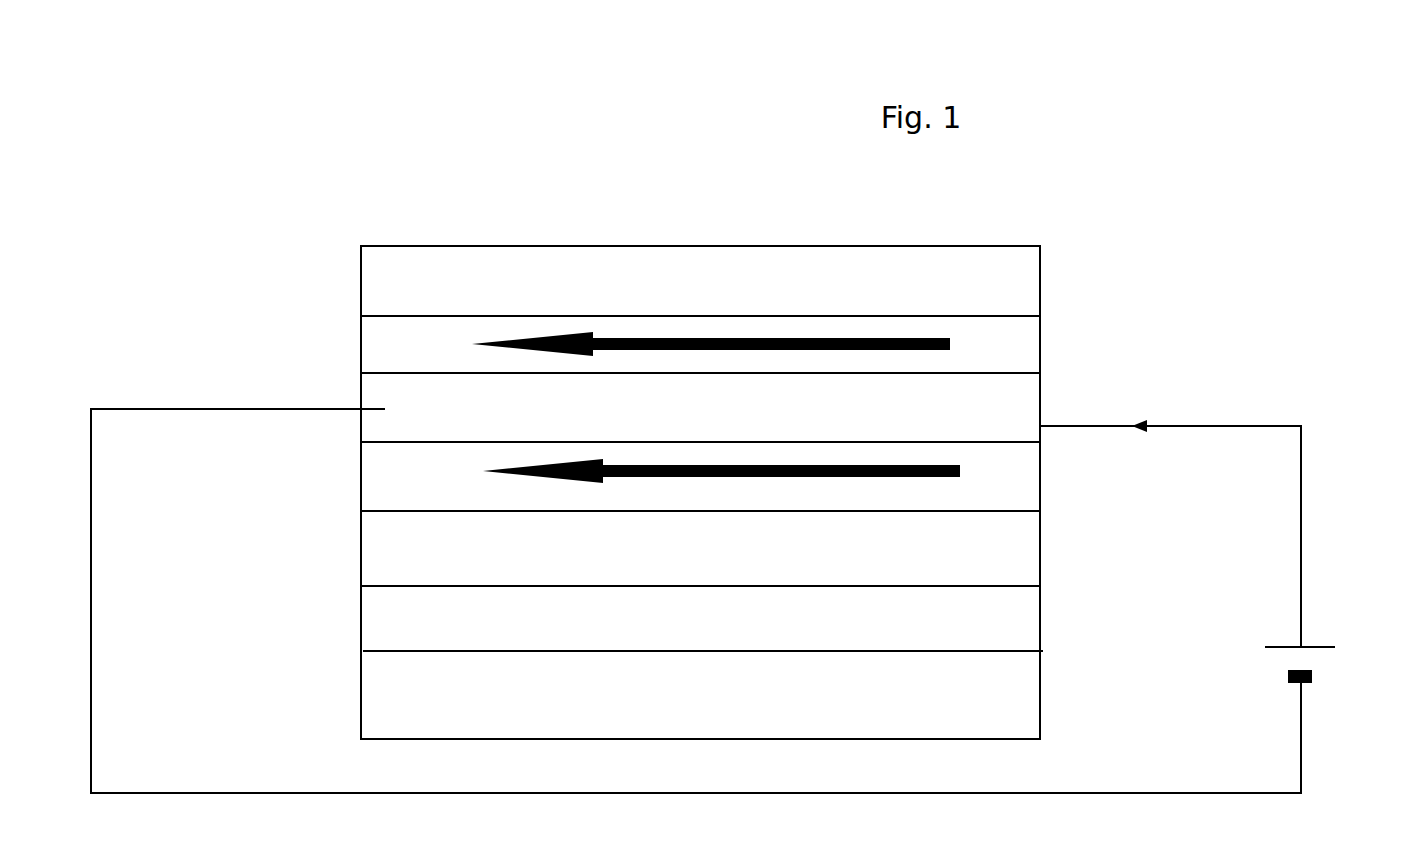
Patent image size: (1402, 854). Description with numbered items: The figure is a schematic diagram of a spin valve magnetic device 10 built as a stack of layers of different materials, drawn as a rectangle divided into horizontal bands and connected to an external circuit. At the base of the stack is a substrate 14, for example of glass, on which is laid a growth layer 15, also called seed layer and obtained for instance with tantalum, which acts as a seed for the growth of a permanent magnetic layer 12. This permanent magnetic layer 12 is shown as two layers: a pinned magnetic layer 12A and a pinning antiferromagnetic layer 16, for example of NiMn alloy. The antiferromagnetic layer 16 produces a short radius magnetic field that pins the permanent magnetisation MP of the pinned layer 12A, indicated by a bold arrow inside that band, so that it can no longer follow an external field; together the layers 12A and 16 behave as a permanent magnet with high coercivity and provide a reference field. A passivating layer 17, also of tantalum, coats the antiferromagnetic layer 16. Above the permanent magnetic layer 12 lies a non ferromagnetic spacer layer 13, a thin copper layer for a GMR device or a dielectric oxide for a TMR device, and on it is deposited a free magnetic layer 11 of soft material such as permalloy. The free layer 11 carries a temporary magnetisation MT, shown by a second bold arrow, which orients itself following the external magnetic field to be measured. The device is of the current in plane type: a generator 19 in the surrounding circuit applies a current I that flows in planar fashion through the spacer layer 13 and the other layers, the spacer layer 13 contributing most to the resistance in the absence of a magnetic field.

The spin valve magnetic device 10 is at (382, 190).
The passivating layer 17 is at (1017, 273).
The free magnetic layer 11 is at (735, 266).
The non ferromagnetic spacer layer 13 is at (385, 409).
The permanent magnetic layer 12 is at (643, 504).
The pinned magnetic layer 12A is at (680, 504).
The pinning antiferromagnetic layer 16 is at (370, 538).
The growth layer 15 is at (1027, 623).
The substrate 14 is at (1025, 718).
The generator 19 is at (741, 601).
The temporary magnetisation MT is at (757, 332).
The permanent magnetisation MP is at (772, 478).
The current I is at (1205, 455).